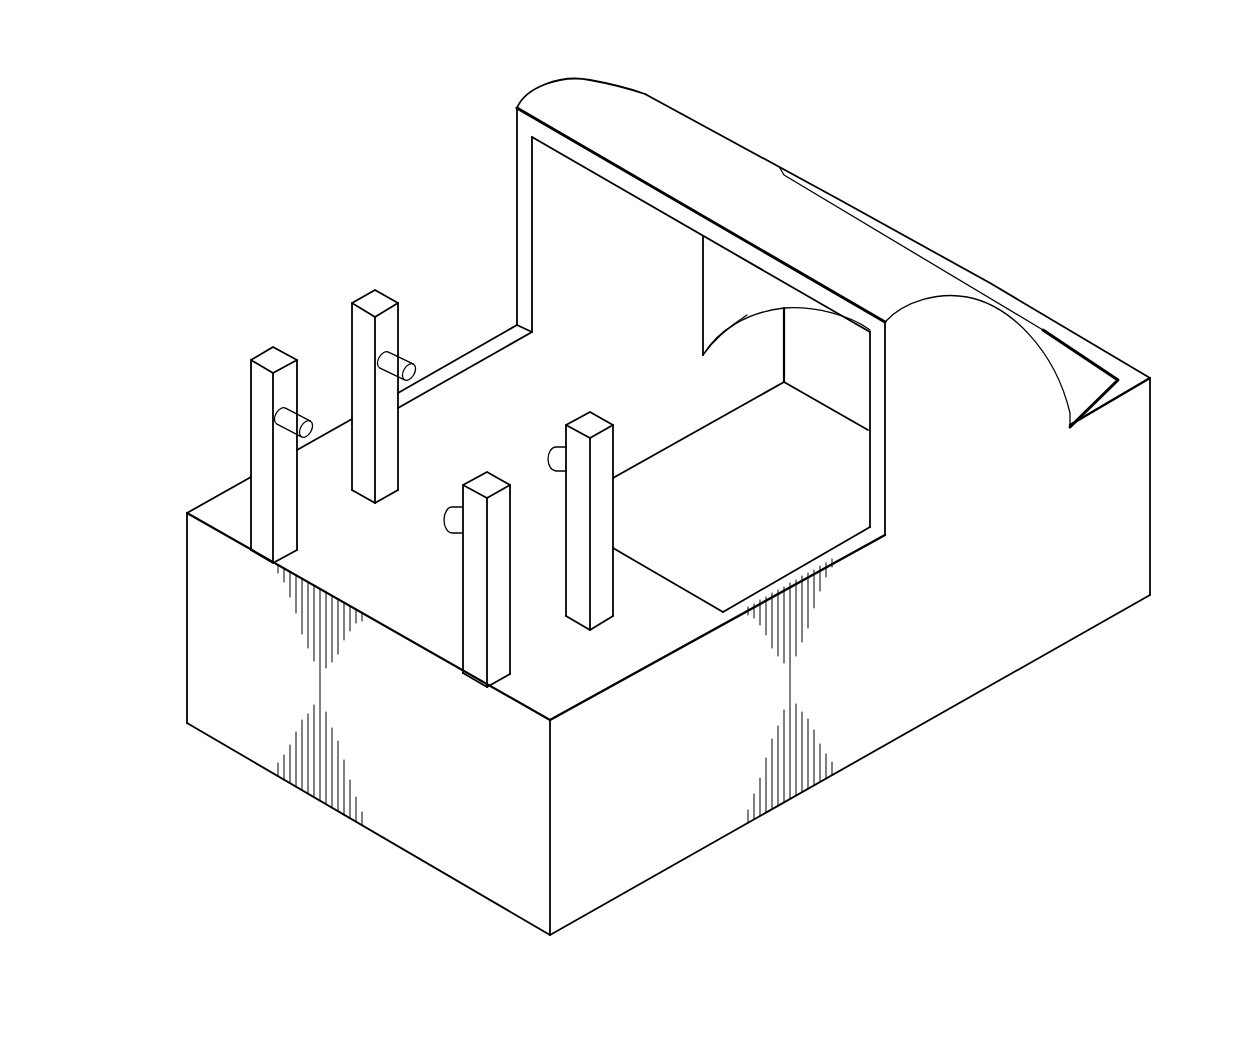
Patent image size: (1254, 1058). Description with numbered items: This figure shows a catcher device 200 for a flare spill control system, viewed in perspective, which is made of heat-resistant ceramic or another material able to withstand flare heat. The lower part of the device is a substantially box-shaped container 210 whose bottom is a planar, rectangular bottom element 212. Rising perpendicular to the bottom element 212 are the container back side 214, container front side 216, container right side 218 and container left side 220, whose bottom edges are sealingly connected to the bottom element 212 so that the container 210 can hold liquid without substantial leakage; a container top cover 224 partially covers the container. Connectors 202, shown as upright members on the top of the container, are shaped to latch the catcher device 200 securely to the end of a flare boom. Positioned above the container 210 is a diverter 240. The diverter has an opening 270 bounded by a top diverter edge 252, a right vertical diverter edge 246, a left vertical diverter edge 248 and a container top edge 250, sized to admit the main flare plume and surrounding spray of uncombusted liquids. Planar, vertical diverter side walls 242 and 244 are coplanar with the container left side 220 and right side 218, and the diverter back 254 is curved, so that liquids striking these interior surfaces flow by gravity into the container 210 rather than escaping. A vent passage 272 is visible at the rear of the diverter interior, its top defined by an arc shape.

The catcher device 200 is at (242, 122).
The connectors 202 is at (250, 400).
The container 210 is at (1038, 673).
The bottom element 212 is at (751, 515).
The container back side 214 is at (1153, 462).
The container front side 216 is at (430, 858).
The container right side 218 is at (893, 731).
The container left side 220 is at (183, 572).
The container top cover 224 is at (416, 563).
The diverter 240 is at (738, 134).
The left diverter side wall 242 is at (1052, 388).
The right diverter side wall 244 is at (548, 198).
The right vertical diverter edge 246 is at (878, 490).
The left vertical diverter edge 248 is at (525, 257).
The container top edge 250 is at (460, 439).
The top diverter edge 252 is at (645, 190).
The diverter back 254 is at (1040, 332).
The opening 270 is at (667, 395).
The vent passage 272 is at (850, 372).